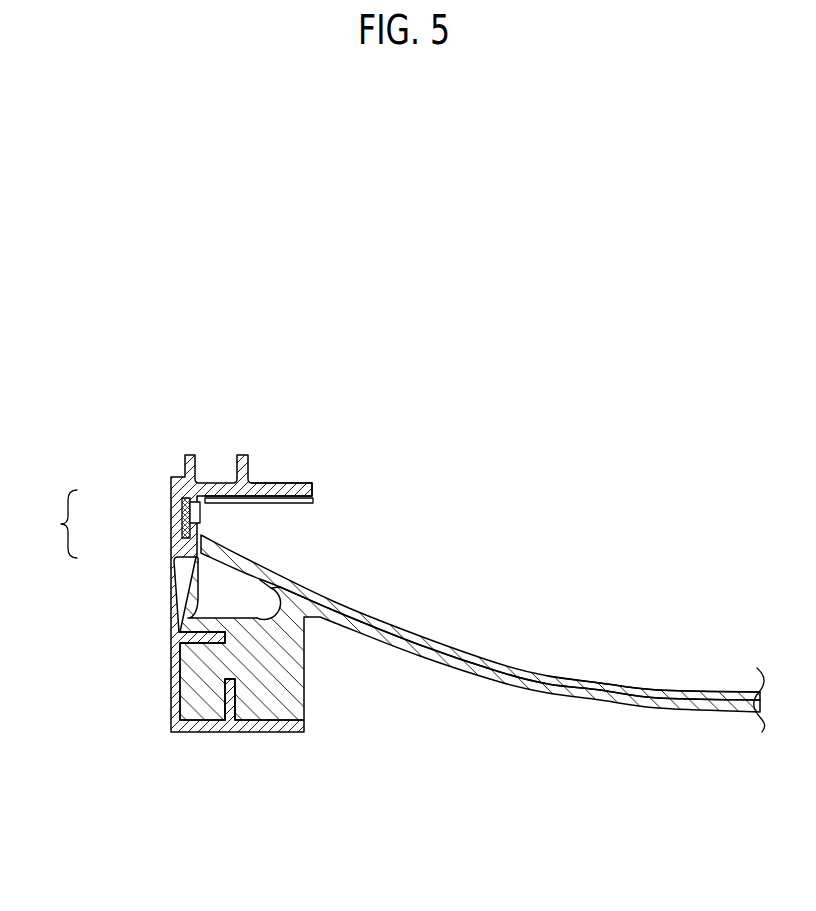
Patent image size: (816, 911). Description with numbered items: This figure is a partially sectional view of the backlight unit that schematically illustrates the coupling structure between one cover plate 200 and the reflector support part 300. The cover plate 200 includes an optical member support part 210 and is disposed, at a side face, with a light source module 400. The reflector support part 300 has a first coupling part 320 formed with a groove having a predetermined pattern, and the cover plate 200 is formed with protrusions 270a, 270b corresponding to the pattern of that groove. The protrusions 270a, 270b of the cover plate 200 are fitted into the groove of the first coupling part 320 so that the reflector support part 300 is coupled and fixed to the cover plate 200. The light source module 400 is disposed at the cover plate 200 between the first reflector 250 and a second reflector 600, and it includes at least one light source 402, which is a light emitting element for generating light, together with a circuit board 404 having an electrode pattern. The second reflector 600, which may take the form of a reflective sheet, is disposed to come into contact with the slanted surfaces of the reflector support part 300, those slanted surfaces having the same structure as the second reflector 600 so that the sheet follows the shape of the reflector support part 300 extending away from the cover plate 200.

The cover plate 200 is at (173, 478).
The optical member support part 210 is at (282, 483).
The first reflector 250 is at (313, 500).
The reflector support part 300 is at (447, 660).
The first coupling part 320 is at (275, 680).
The light source module 400 is at (52, 524).
The light source 402 is at (196, 518).
The circuit board 404 is at (182, 501).
The second reflector 600 is at (658, 691).
The protrusion 270a is at (227, 697).
The protrusion 270b is at (204, 643).